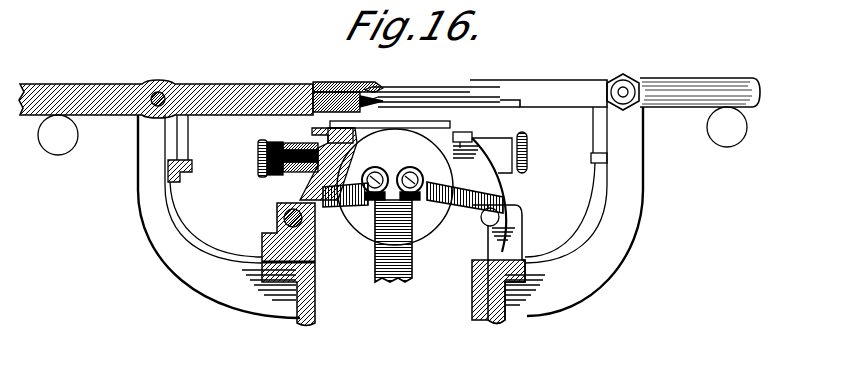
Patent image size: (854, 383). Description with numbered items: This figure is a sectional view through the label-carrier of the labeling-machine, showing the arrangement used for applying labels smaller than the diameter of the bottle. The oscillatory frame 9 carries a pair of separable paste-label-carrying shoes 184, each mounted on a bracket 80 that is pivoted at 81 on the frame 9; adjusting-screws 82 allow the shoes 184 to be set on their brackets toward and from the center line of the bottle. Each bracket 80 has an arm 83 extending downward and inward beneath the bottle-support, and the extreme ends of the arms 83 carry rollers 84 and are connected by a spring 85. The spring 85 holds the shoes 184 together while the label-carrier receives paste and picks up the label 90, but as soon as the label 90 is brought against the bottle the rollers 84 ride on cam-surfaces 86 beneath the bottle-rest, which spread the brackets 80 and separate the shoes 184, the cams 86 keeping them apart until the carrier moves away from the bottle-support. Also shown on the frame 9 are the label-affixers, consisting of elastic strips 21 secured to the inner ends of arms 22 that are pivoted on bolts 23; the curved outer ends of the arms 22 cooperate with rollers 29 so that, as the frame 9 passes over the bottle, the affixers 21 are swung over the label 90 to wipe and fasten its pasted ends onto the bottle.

The oscillatory frame 9 is at (315, 307).
The label-affixer strips 21 is at (365, 97).
The affixer-arms 22 is at (226, 92).
The bolts 23 is at (160, 92).
The rollers 29 is at (78, 135).
The brackets 80 is at (290, 189).
The pivot 81 is at (283, 219).
The adjusting-screws 82 is at (258, 158).
The arms 83 is at (339, 208).
The rollers 84 is at (411, 168).
The spring 85 is at (372, 167).
The cam-surfaces 86 is at (388, 283).
The label 90 is at (423, 127).
The separable label-carrying shoes 184 is at (330, 125).